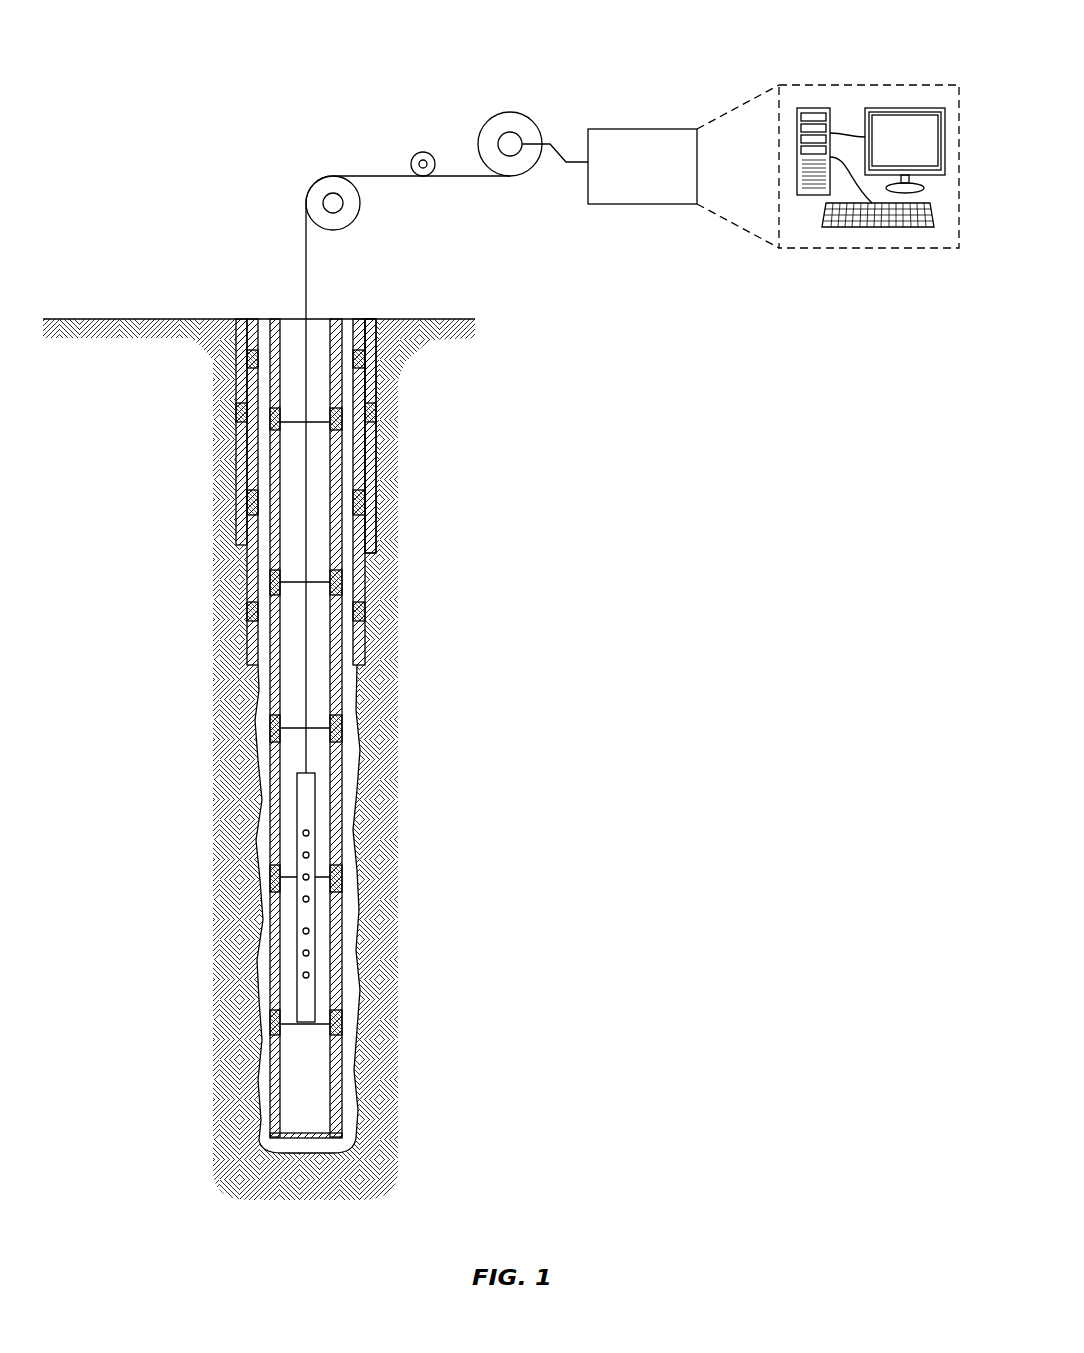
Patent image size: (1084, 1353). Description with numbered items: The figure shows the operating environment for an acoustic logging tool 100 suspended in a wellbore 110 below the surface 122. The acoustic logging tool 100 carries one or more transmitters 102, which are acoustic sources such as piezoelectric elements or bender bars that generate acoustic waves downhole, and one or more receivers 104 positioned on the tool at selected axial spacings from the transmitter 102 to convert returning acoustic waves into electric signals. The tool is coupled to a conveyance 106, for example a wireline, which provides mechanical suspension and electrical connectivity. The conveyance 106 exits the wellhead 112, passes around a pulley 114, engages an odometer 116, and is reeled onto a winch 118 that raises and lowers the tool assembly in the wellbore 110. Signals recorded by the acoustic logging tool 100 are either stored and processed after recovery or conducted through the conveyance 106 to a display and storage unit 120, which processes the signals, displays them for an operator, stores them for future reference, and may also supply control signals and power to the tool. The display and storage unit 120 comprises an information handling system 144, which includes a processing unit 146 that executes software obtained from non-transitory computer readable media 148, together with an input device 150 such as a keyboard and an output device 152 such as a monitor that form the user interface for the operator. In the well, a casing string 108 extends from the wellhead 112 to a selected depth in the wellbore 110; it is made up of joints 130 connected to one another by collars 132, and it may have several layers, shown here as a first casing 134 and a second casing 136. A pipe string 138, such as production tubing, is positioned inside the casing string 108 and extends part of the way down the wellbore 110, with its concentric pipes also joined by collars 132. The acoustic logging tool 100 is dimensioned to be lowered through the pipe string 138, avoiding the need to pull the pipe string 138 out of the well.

The acoustic logging tool 100 is at (307, 1010).
The transmitter 102 is at (360, 1000).
The receiver 104 is at (309, 833).
The conveyance 106 is at (307, 280).
The casing string 108 is at (208, 536).
The wellbore 110 is at (357, 670).
The wellhead 112 is at (293, 308).
The pulley 114 is at (309, 190).
The odometer 116 is at (420, 148).
The winch 118 is at (528, 114).
The display and storage unit 120 is at (652, 129).
The surface 122 is at (82, 318).
The joint 130 is at (248, 562).
The collar 132 is at (237, 603).
The first casing 134 is at (358, 578).
The second casing 136 is at (368, 530).
The pipe string 138 is at (343, 1093).
The information handling system 144 is at (850, 84).
The processing unit 146 is at (810, 208).
The non-transitory computer readable media 148 is at (812, 108).
The input device 150 is at (878, 226).
The output device 152 is at (903, 108).